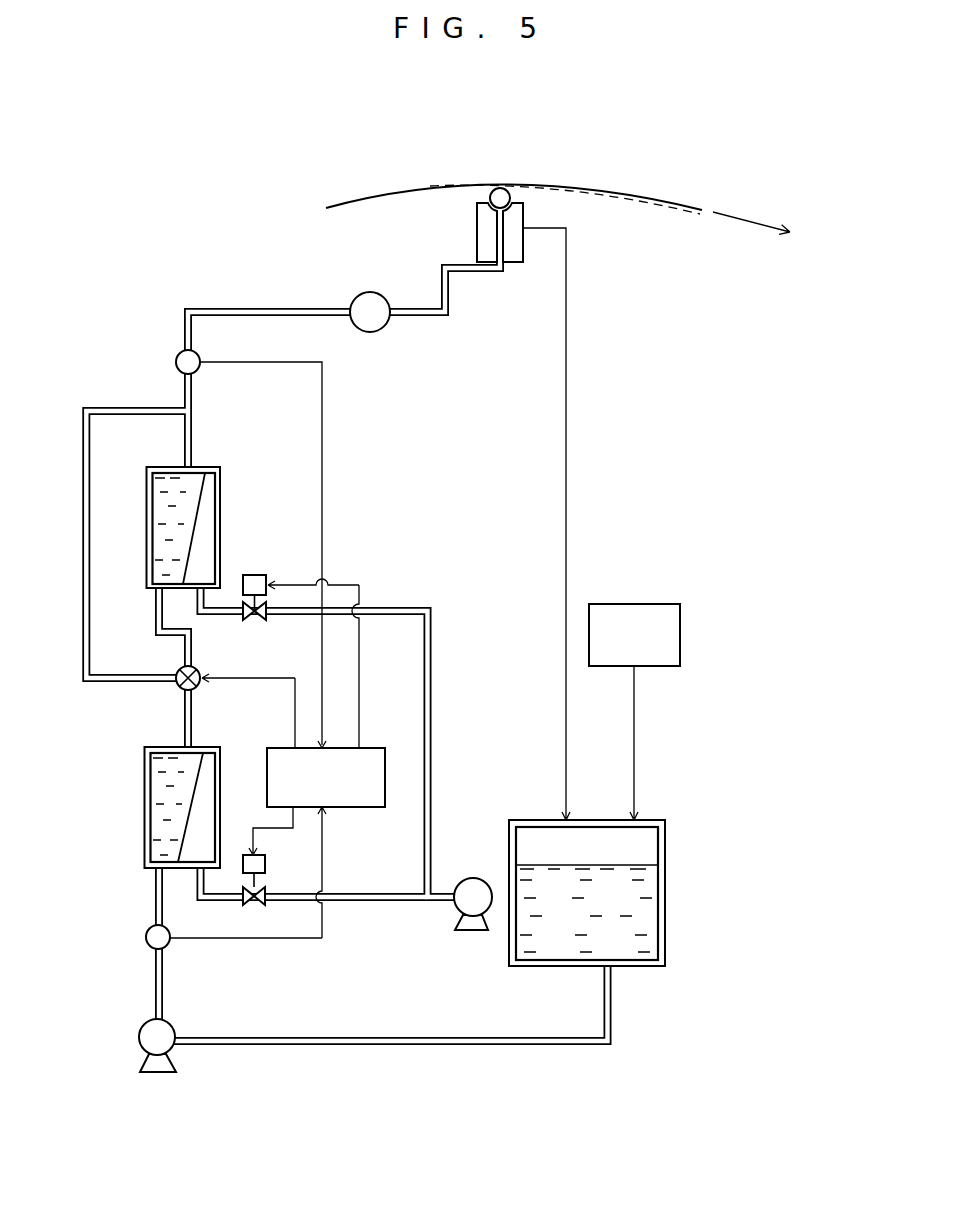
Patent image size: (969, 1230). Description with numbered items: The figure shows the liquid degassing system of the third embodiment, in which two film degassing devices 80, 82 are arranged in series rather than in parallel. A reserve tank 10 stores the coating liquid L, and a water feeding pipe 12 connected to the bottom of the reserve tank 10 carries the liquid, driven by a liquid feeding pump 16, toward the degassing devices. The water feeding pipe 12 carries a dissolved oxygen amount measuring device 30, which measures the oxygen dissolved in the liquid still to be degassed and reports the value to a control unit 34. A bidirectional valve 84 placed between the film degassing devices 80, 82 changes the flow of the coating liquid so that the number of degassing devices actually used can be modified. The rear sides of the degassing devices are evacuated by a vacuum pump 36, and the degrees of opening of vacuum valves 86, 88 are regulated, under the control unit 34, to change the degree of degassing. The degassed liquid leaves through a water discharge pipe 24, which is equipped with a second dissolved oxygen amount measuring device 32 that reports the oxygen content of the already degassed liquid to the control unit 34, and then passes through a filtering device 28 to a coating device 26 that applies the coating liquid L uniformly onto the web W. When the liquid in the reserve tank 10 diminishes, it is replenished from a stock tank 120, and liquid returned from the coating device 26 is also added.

The reserve tank 10 is at (663, 913).
The water feeding pipe 12 is at (435, 1038).
The liquid feeding pump 16 is at (178, 1030).
The water discharge pipe 24 is at (224, 309).
The coating device 26 is at (530, 253).
The filtering device 28 is at (358, 297).
The dissolved oxygen amount measuring device 30 is at (168, 946).
The dissolved oxygen amount measuring device 32 is at (176, 359).
The control unit 34 is at (385, 748).
The vacuum pump 36 is at (455, 905).
The film degassing device 80 is at (144, 760).
The film degassing device 82 is at (221, 505).
The bidirectional valve 84 is at (201, 671).
The vacuum valve 86 is at (267, 887).
The vacuum valve 88 is at (254, 575).
The stock tank 120 is at (680, 632).
The web W is at (353, 205).
The coating liquid L is at (630, 863).